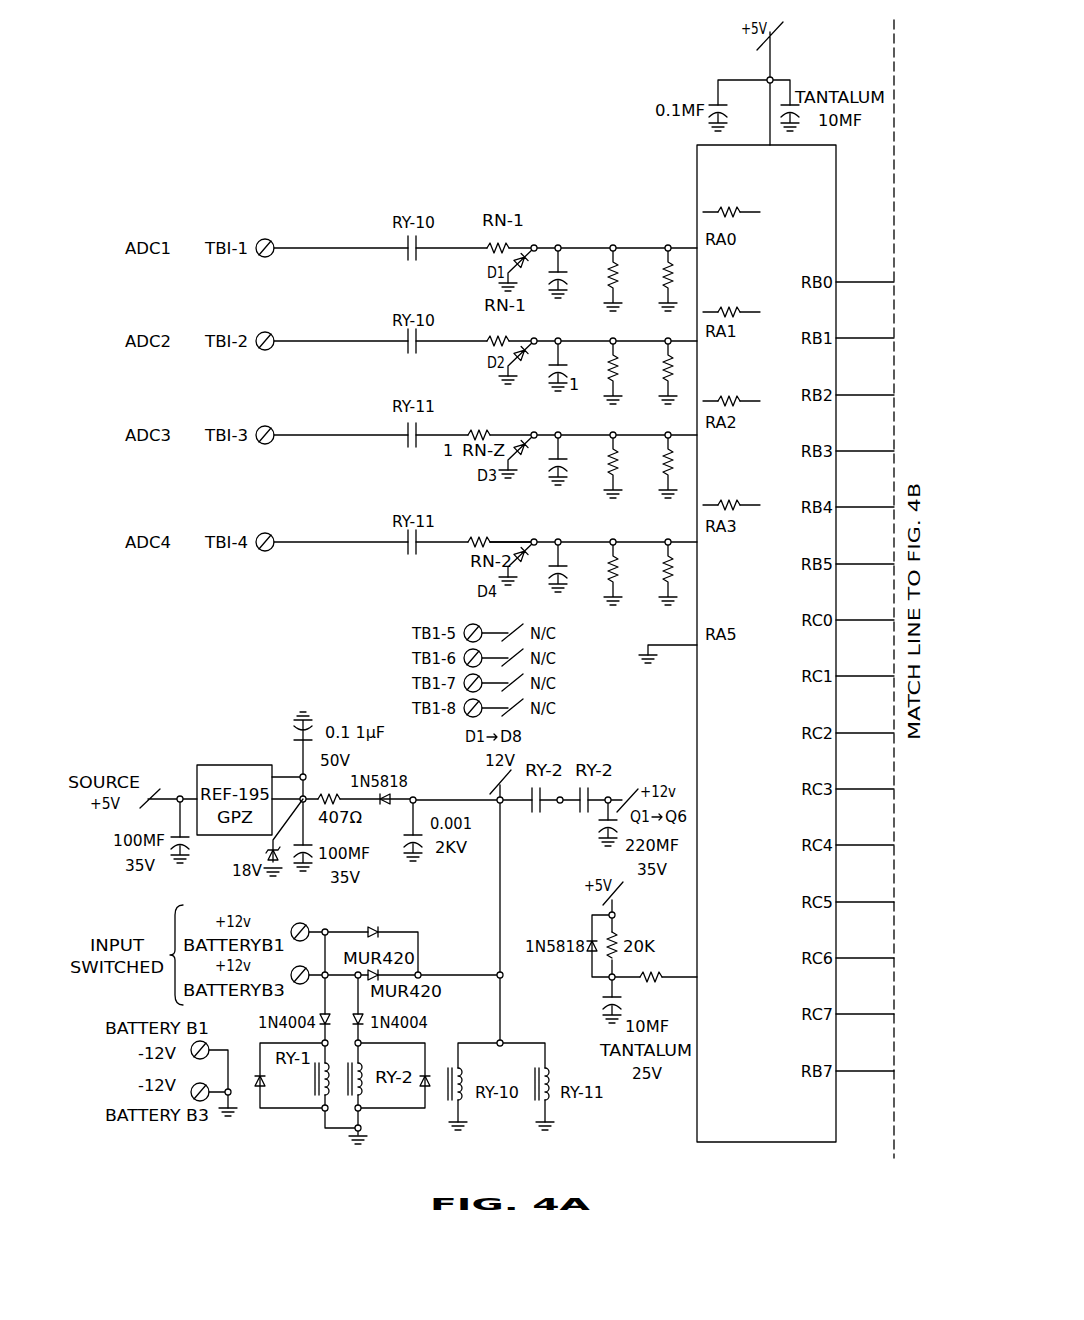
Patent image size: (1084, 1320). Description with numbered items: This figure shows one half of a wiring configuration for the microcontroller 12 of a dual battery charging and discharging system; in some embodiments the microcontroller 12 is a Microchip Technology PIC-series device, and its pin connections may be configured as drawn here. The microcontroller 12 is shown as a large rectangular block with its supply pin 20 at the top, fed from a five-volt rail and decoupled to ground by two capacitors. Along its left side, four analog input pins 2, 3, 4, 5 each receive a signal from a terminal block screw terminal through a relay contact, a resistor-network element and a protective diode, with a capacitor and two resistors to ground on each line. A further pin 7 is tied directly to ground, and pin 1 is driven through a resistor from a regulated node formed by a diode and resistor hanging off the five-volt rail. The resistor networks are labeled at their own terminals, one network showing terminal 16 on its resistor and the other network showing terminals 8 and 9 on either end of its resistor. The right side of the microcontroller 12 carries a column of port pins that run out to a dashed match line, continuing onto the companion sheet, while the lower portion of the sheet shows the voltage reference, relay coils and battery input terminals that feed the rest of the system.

The microcontroller 12 is at (697, 181).
The microcontroller power supply pin 20 is at (759, 112).
The microcontroller pin RA0 2 is at (682, 238).
The microcontroller pin RA1 3 is at (682, 331).
The microcontroller pin RA2 4 is at (682, 425).
The microcontroller pin RA3 5 is at (682, 532).
The microcontroller pin RA5 7 is at (668, 644).
The microcontroller pin 1 input resistor 1 is at (655, 978).
The resistor network RN-Z pin 16 is at (488, 426).
The resistor network RN-2 pin 8 is at (473, 535).
The resistor network RN-2 pin 9 is at (512, 532).